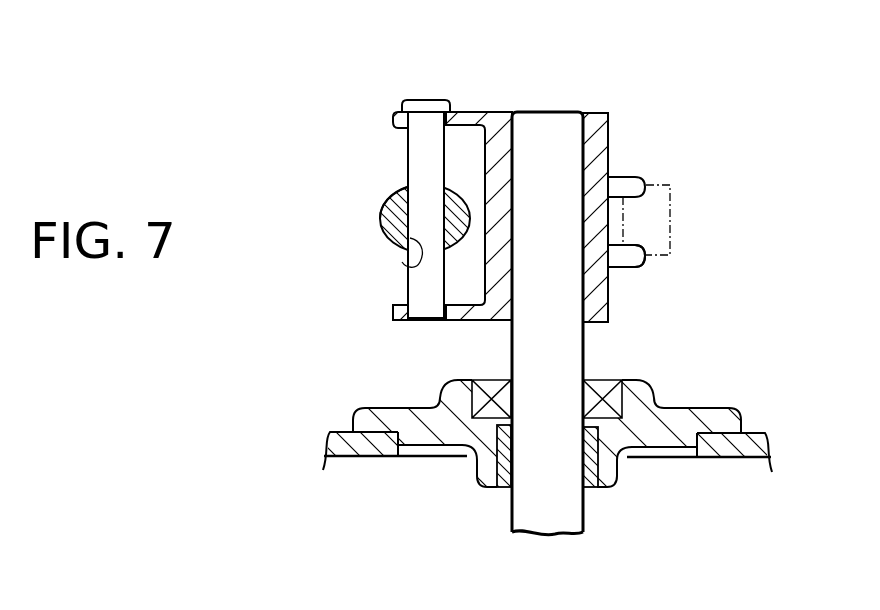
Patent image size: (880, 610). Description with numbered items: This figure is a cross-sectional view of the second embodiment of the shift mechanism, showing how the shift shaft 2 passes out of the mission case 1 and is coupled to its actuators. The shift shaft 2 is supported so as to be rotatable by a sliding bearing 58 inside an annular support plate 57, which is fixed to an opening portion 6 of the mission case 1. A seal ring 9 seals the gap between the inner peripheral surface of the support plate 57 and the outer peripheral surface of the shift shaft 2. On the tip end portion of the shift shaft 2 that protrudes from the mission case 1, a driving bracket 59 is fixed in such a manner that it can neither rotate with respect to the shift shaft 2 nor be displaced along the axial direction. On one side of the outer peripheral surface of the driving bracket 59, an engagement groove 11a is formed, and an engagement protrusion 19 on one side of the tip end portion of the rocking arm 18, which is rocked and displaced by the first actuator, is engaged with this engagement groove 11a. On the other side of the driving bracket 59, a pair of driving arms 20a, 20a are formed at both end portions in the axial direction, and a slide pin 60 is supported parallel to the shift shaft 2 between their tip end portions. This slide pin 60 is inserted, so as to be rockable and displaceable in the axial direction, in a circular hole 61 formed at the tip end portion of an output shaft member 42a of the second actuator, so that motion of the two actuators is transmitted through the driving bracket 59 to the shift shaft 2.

The mission case 1 is at (750, 433).
The shift shaft 2 is at (556, 522).
The opening portion 6 is at (693, 447).
The seal ring 9 is at (492, 410).
The engagement groove 11a is at (633, 200).
The rocking arm 18 is at (660, 185).
The engagement protrusion 19 is at (622, 245).
The driving arms 20a is at (470, 118).
The output shaft member 42a is at (387, 220).
The support plate 57 is at (692, 408).
The sliding bearing 58 is at (590, 462).
The driving bracket 59 is at (600, 140).
The slide pin 60 is at (413, 148).
The circular hole 61 is at (410, 238).